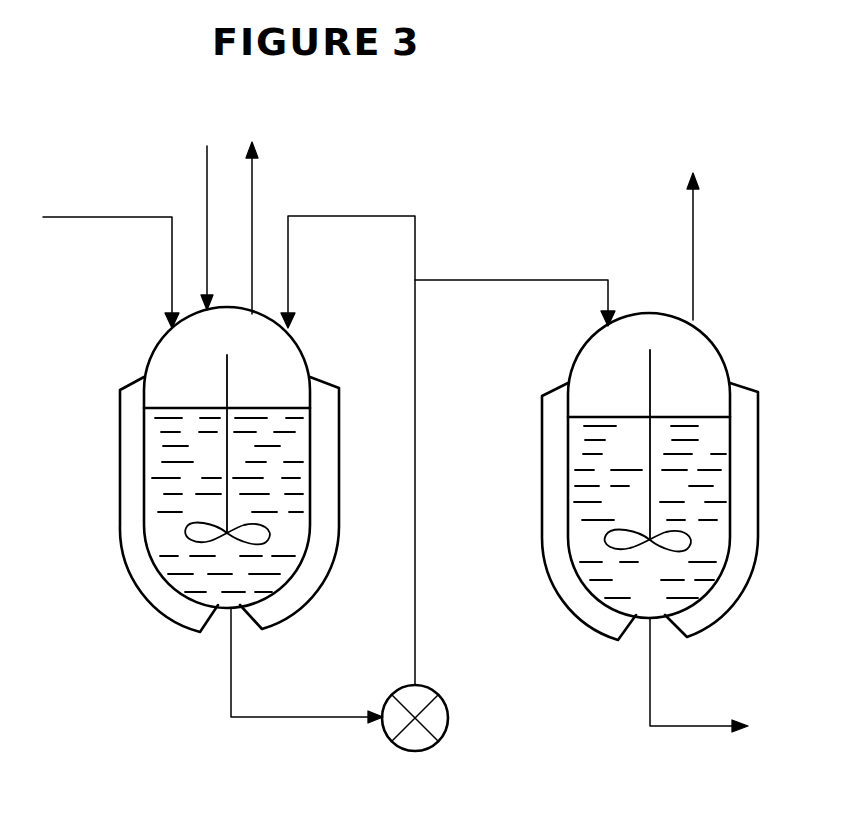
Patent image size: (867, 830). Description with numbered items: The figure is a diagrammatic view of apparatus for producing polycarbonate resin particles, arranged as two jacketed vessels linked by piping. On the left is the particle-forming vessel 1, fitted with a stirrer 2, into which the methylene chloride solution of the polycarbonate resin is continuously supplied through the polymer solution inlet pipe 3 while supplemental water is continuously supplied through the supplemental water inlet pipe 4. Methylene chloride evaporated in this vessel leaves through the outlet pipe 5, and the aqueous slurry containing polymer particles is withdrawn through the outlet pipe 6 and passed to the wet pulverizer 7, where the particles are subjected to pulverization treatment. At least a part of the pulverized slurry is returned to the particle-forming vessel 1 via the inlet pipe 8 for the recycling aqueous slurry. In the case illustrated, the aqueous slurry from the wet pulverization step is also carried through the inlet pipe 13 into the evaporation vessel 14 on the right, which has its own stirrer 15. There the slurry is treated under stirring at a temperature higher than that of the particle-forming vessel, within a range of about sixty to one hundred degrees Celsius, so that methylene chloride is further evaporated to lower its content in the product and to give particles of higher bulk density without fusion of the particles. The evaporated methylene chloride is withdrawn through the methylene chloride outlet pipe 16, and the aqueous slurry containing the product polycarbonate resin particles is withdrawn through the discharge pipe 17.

The particle-forming vessel 1 is at (144, 475).
The stirrer 2 is at (186, 536).
The inlet pipe for the polymer solution 3 is at (93, 218).
The inlet pipe for the supplemental water 4 is at (207, 181).
The outlet pipe for the evaporated methylene chloride 5 is at (252, 236).
The outlet pipe for the aqueous slurry containing polymer particles 6 is at (292, 718).
The wet pulverizer 7 is at (416, 742).
The inlet pipe for the recycling aqueous slurry 8 is at (338, 216).
The inlet pipe for the aqueous slurry 13 is at (516, 280).
The evaporation vessel 14 is at (568, 498).
The stirrer 15 is at (609, 543).
The outlet pipe for methylene chloride 16 is at (693, 250).
The discharge pipe for the aqueous slurry containing product polycarbonate resin par 17 is at (684, 727).